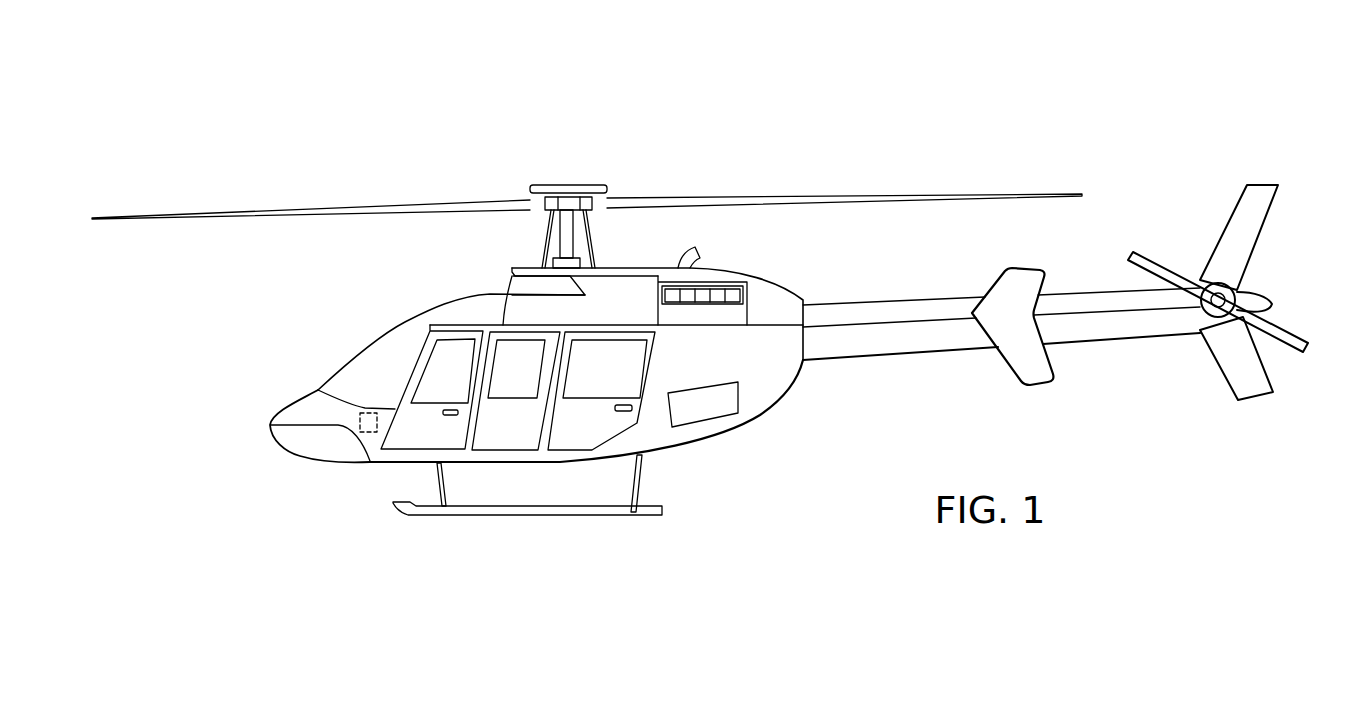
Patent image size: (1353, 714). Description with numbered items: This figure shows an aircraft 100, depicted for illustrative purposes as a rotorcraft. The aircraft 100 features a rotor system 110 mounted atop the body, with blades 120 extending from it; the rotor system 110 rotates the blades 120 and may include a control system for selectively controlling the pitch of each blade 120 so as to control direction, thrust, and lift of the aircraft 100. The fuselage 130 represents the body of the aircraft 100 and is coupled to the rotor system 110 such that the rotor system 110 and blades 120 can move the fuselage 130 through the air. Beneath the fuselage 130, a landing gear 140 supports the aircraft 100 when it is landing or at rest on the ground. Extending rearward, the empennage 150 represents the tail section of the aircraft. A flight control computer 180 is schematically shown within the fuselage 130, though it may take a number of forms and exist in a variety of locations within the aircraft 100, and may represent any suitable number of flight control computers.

The aircraft 100 is at (386, 131).
The rotor system 110 is at (568, 185).
The blades 120 is at (838, 195).
The fuselage 130 is at (320, 461).
The landing gear 140 is at (502, 517).
The empennage 150 is at (898, 358).
The flight control computer 180 is at (365, 433).